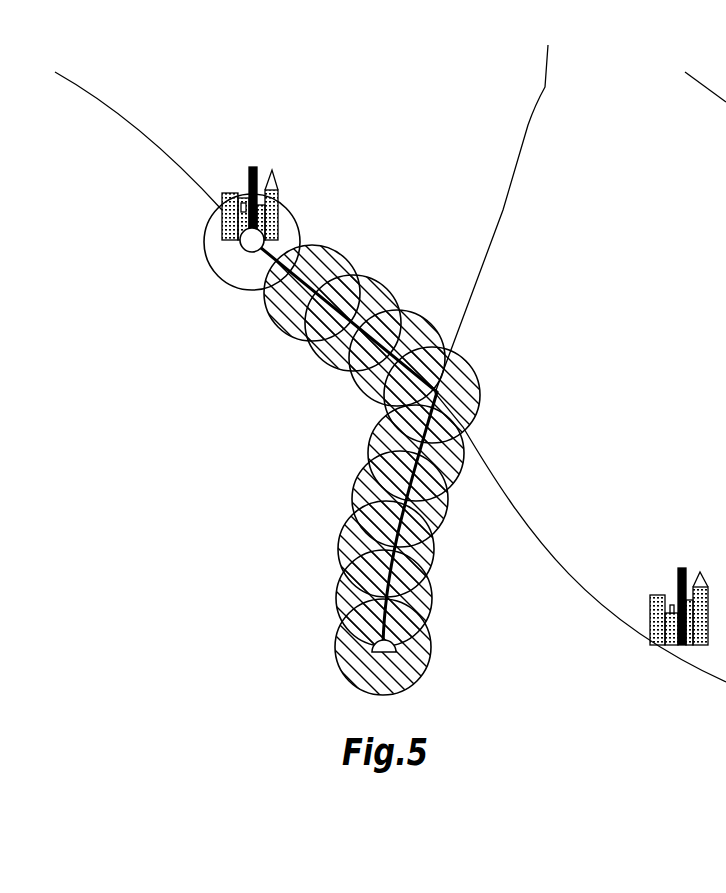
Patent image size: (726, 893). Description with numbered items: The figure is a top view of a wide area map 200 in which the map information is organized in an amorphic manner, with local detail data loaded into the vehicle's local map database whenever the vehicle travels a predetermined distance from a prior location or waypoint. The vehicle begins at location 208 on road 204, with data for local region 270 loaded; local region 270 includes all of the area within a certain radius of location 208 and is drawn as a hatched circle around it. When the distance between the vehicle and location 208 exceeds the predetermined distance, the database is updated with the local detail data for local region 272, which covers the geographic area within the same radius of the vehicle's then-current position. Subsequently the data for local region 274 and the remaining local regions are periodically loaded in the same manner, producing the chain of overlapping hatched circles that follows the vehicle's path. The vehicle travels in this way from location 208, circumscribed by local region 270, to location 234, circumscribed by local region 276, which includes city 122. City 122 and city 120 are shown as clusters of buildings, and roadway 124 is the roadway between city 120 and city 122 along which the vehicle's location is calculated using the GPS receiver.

The city 120 is at (682, 568).
The city 122 is at (253, 165).
The roadway 124 is at (140, 128).
The wide area map 200 is at (435, 138).
The road 204 is at (503, 211).
The location 208 is at (372, 652).
The location 234 is at (240, 247).
The local region 270 is at (431, 652).
The local region 272 is at (432, 601).
The local region 274 is at (434, 556).
The local region 276 is at (300, 225).